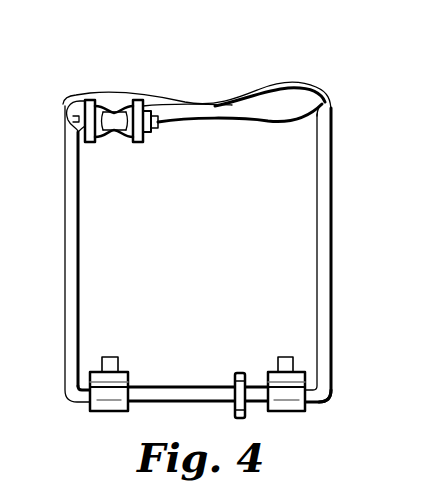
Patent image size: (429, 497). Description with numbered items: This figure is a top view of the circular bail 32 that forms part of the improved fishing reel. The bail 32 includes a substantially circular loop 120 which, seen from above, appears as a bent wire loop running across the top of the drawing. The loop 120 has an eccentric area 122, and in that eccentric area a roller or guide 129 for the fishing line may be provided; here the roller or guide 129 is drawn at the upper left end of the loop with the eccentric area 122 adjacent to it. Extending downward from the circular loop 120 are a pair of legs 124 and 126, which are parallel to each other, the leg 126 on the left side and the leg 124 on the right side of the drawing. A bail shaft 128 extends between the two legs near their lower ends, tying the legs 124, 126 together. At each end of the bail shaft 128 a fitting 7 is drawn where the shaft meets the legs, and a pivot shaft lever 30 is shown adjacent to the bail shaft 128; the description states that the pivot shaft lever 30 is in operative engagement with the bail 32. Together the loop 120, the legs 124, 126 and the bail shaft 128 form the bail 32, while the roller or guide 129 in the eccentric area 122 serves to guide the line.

The clamp 7 is at (112, 401).
The pivot shaft lever 30 is at (242, 372).
The circular bail 32 is at (338, 404).
The circular loop 120 is at (283, 85).
The eccentric area 122 is at (157, 123).
The leg 124 is at (332, 283).
The leg 126 is at (73, 238).
The bail shaft 128 is at (200, 388).
The roller or guide 129 is at (88, 100).